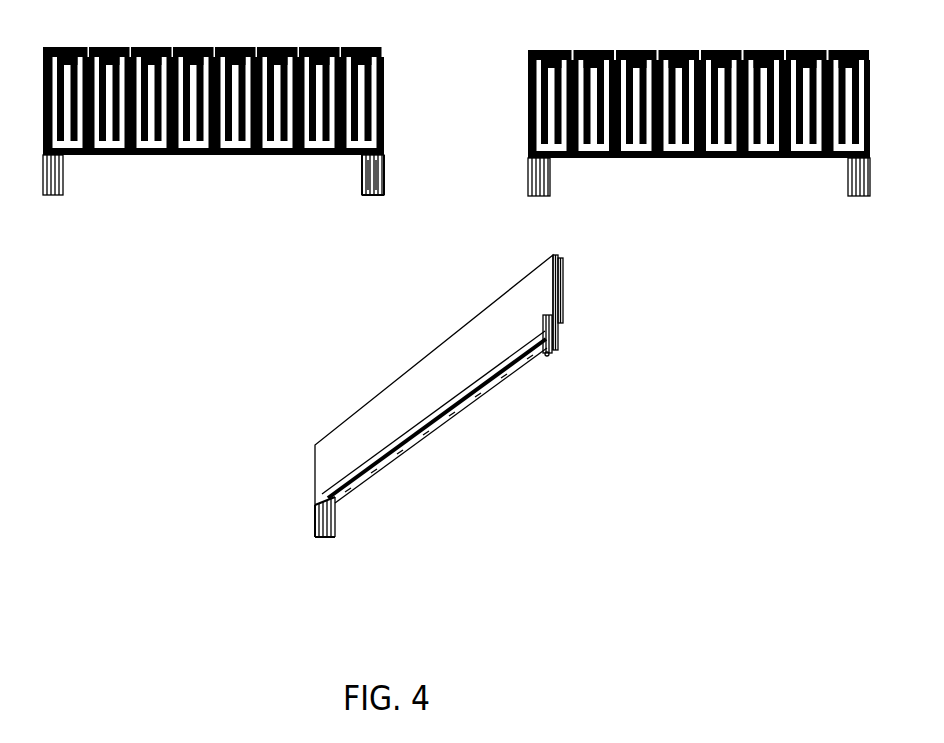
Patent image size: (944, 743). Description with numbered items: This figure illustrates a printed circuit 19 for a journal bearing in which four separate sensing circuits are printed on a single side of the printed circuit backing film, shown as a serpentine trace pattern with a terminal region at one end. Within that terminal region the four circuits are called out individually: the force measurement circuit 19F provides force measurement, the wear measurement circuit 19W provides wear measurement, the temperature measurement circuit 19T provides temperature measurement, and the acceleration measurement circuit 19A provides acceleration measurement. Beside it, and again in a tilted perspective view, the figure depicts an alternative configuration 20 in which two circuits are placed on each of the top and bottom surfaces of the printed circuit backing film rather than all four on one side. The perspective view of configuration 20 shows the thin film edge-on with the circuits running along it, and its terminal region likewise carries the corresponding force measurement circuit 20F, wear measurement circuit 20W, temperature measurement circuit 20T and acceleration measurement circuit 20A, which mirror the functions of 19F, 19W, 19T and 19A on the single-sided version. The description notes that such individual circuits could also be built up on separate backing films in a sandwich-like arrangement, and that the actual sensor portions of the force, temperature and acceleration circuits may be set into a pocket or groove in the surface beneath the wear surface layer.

The printed circuit 19 is at (218, 215).
The force measurement circuit 19F is at (362, 180).
The acceleration measurement circuit 19A is at (383, 183).
The wear measurement circuit 19W is at (372, 196).
The temperature measurement circuit 19T is at (375, 196).
The printed circuit configuration 20 is at (709, 194).
The force measurement circuit 20F is at (317, 533).
The wear measurement circuit 20W is at (320, 537).
The temperature measurement circuit 20T is at (334, 534).
The acceleration measurement circuit 20A is at (337, 527).